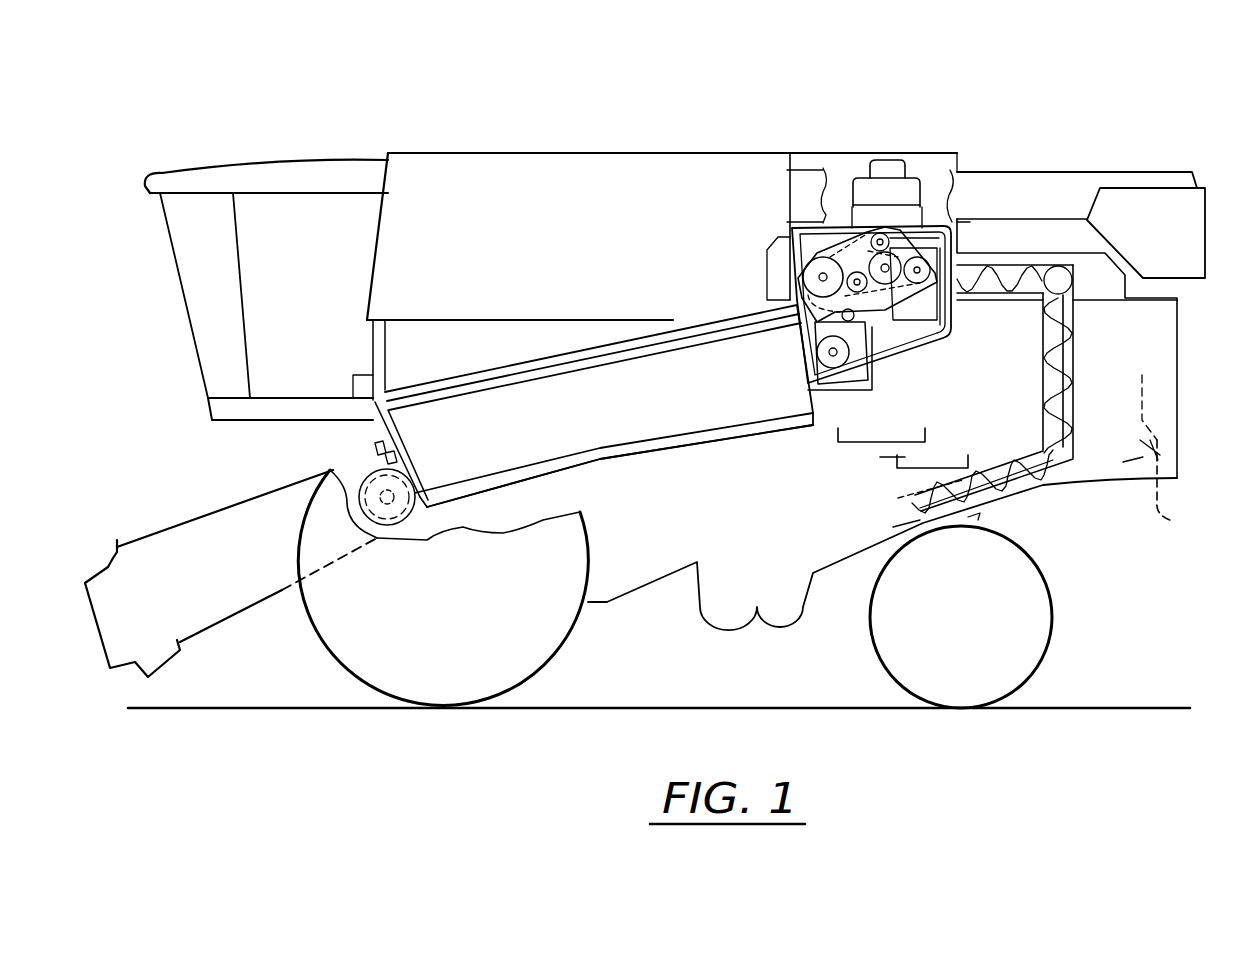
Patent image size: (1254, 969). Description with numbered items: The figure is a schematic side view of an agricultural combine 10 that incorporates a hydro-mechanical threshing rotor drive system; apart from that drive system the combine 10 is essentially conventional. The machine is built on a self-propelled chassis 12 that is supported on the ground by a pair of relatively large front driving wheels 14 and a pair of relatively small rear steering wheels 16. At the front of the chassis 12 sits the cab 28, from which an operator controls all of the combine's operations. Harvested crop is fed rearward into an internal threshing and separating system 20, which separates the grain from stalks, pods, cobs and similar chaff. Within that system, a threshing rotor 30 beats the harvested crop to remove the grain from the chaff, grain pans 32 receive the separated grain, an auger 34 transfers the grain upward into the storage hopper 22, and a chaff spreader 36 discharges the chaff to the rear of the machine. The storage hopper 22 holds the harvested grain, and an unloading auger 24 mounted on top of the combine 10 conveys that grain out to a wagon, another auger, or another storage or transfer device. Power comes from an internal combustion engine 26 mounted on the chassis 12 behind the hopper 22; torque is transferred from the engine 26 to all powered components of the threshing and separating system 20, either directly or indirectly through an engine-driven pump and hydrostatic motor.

The agricultural combine 10 is at (1040, 50).
The chassis 12 is at (622, 577).
The front driving wheels 14 is at (333, 627).
The rear steering wheels 16 is at (213, 520).
The threshing and separating system 20 is at (747, 442).
The storage hopper 22 is at (652, 160).
The auger 24 is at (1040, 185).
The internal combustion engine 26 is at (876, 190).
The cab 28 is at (316, 162).
The threshing rotor 30 is at (622, 422).
The grain pans 32 is at (897, 458).
The auger 34 is at (1073, 360).
The chaff spreader 36 is at (1160, 514).